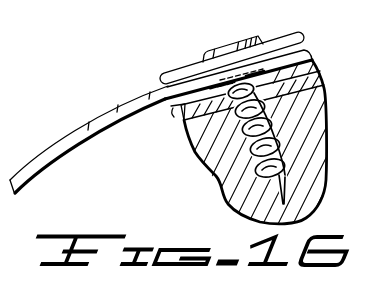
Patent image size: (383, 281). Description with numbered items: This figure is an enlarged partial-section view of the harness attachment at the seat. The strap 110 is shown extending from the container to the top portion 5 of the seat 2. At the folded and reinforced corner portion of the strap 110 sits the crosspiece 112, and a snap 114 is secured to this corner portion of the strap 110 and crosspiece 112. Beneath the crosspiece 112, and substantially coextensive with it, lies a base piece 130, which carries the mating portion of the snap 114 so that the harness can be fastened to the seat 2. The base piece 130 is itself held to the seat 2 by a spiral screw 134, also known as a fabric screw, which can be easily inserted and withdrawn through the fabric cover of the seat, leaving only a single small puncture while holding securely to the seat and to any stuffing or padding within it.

The seat 2 is at (318, 171).
The top portion of the seat 5 is at (318, 78).
The strap 110 is at (107, 112).
The crosspiece 112 is at (303, 43).
The snap 114 is at (231, 45).
The base piece 130 is at (171, 115).
The spiral screw 134 is at (314, 136).